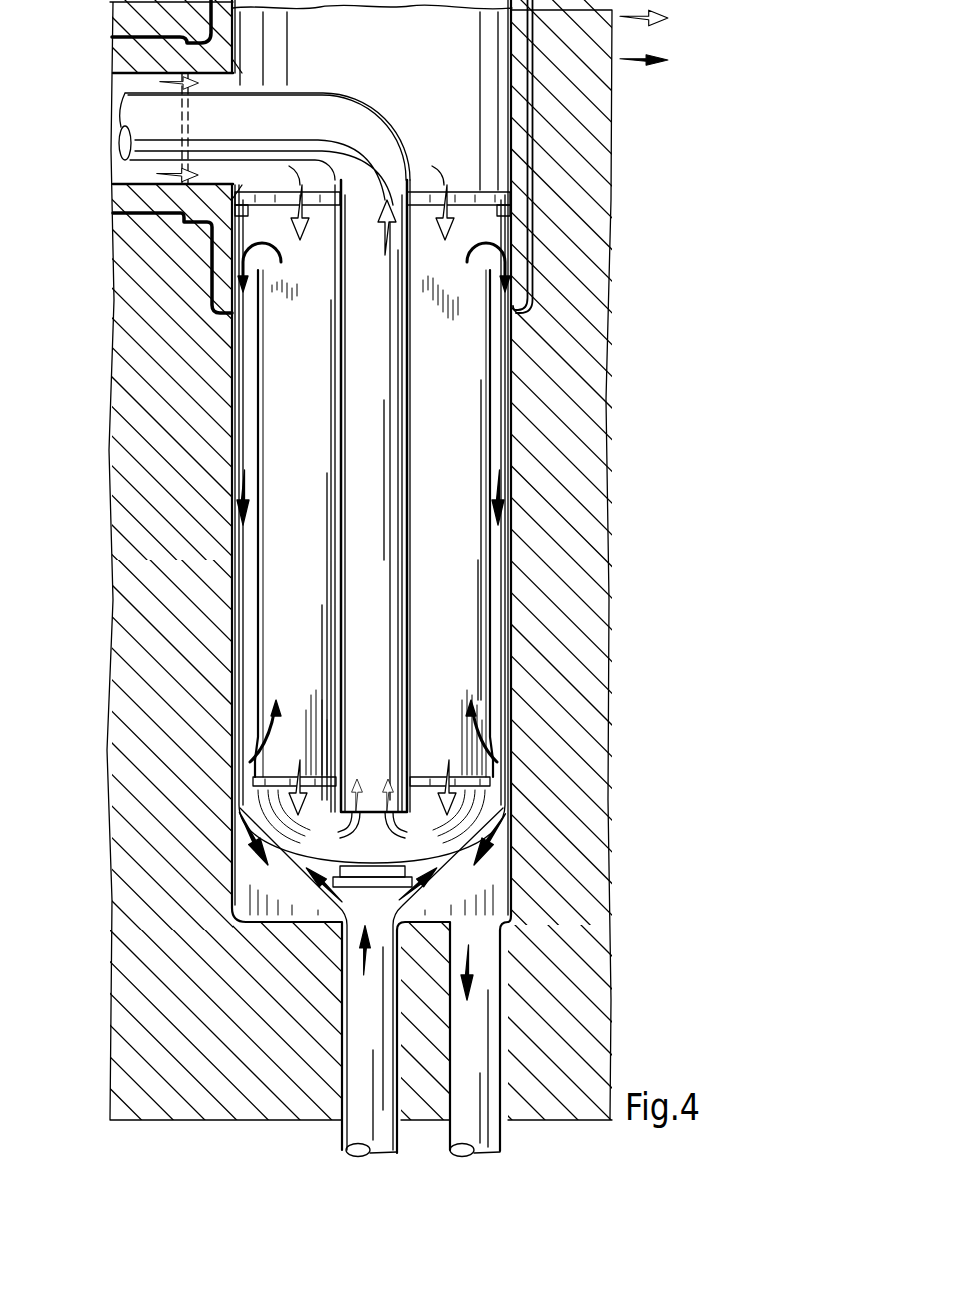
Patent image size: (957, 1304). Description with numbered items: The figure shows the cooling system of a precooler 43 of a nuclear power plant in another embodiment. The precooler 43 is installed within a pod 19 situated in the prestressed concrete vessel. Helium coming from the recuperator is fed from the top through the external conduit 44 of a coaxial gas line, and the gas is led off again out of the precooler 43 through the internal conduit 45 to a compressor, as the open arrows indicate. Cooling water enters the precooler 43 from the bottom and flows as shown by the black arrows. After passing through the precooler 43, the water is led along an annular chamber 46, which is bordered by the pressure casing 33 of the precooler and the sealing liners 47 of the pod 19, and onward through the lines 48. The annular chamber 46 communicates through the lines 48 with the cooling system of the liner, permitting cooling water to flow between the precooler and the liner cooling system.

The pod 19 is at (434, 58).
The pressure casing 33 is at (493, 343).
The precooler 43 is at (470, 430).
The external conduit 44 is at (127, 82).
The internal conduit 45 is at (138, 127).
The annular chamber 46 is at (503, 605).
The sealing liners 47 is at (505, 715).
The lines 48 is at (120, 34).